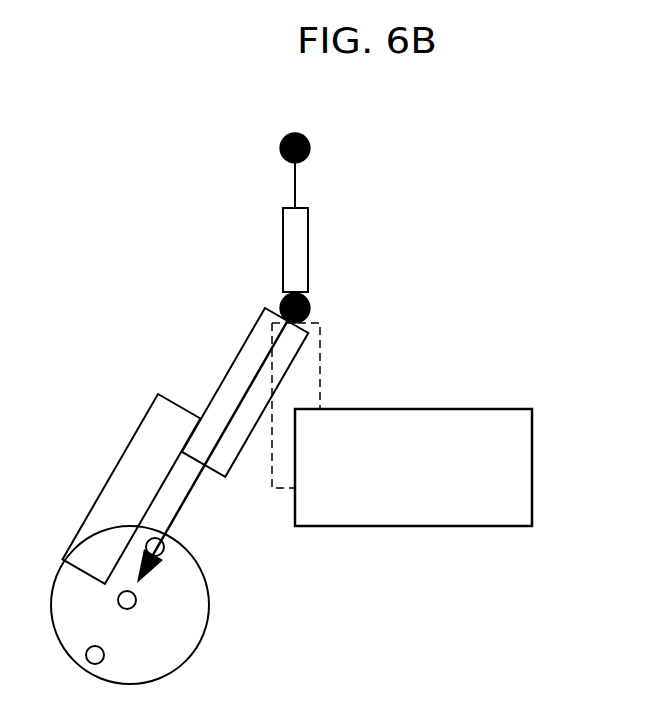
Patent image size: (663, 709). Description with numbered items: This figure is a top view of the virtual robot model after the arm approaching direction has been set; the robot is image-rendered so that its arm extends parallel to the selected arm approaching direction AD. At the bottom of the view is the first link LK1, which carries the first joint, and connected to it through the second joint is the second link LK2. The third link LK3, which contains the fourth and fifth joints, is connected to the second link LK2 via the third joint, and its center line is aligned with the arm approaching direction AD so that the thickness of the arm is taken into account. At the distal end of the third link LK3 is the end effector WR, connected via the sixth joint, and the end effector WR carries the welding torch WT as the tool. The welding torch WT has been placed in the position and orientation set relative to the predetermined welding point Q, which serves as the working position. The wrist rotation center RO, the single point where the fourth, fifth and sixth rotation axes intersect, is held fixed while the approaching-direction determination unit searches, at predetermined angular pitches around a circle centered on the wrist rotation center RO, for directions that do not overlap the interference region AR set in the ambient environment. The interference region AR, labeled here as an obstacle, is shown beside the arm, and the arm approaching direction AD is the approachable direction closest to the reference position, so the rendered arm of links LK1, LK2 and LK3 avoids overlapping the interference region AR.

The welding point Q is at (308, 142).
The welding torch WT is at (297, 185).
The end effector WR is at (310, 225).
The wrist rotation center RO is at (312, 302).
The third link LK3 is at (242, 345).
The second link LK2 is at (127, 448).
The arm approaching direction AD is at (182, 508).
The first link LK1 is at (208, 593).
The interference region AR is at (532, 468).